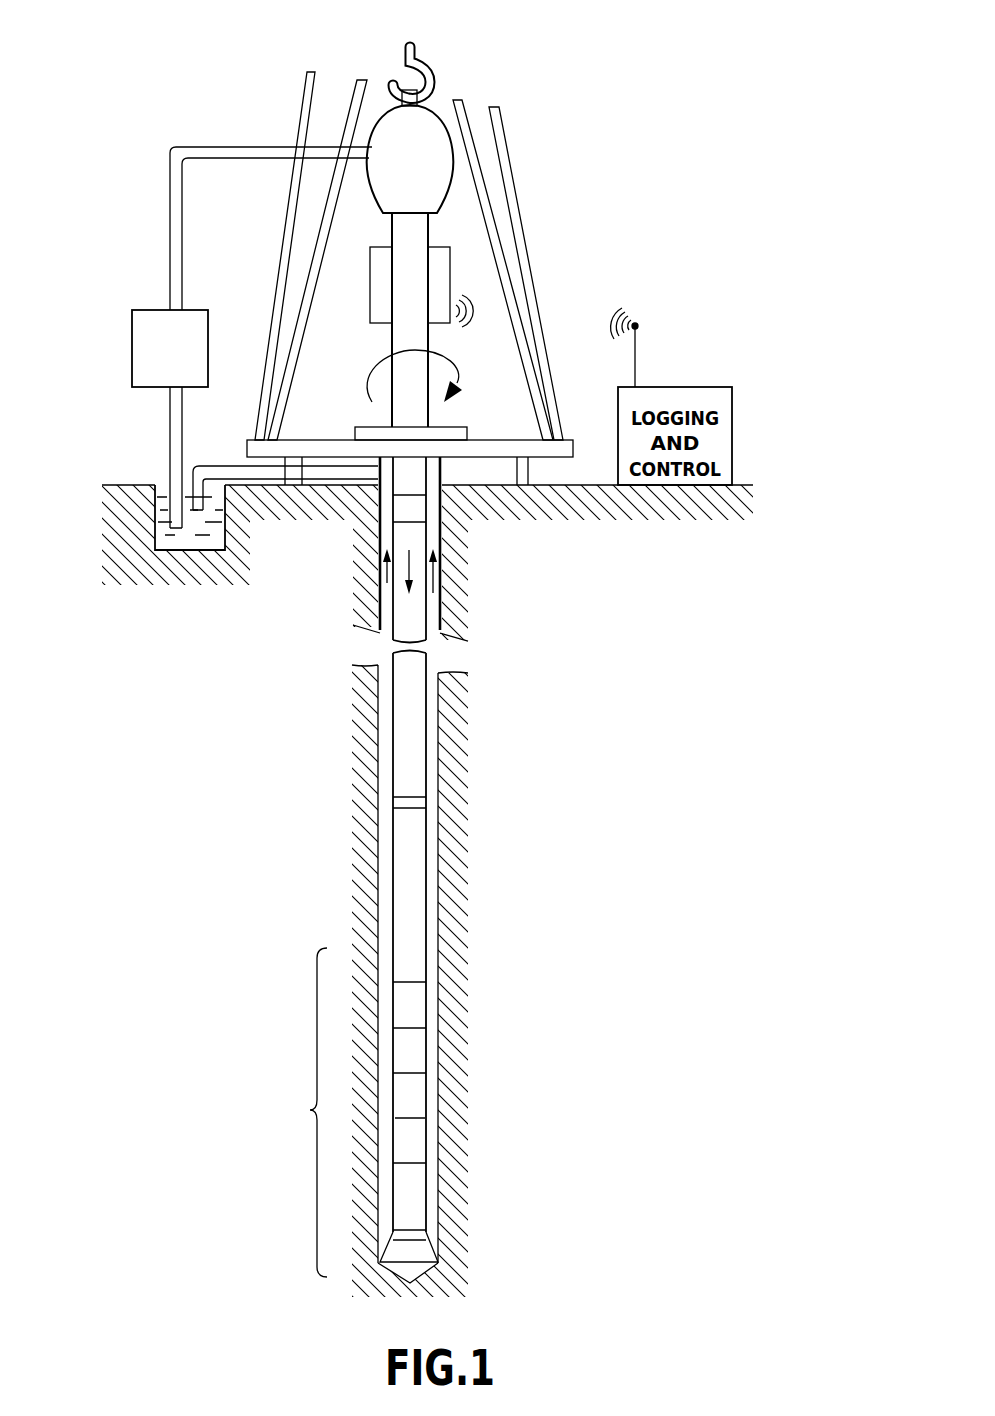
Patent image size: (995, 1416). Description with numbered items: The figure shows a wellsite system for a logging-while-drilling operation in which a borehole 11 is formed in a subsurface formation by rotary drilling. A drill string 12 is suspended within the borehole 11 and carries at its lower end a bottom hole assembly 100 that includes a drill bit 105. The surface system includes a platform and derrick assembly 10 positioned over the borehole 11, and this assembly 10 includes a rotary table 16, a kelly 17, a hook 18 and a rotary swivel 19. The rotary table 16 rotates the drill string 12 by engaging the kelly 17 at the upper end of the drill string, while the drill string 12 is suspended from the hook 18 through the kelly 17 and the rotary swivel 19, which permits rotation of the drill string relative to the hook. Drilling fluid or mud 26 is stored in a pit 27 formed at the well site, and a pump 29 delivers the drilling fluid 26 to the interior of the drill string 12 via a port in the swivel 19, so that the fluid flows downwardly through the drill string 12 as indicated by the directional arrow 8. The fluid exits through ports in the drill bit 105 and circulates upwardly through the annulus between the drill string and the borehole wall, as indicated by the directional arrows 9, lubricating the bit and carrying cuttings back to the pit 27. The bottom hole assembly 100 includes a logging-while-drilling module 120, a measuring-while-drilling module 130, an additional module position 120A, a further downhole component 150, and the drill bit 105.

The platform and derrick assembly 10 is at (547, 142).
The hook 18 is at (403, 53).
The rotary swivel 19 is at (378, 188).
The kelly 17 is at (408, 337).
The rotary table 16 is at (460, 428).
The borehole 11 is at (446, 481).
The drill string 12 is at (398, 478).
The directional arrows 9 is at (381, 558).
The directional arrow 8 is at (405, 597).
The pump 29 is at (210, 352).
The pit 27 is at (156, 478).
The drilling fluid 26 is at (196, 541).
The bottom hole assembly 100 is at (289, 1112).
The logging-while-drilling module 120 is at (410, 1058).
The measuring-while-drilling module 130 is at (410, 1108).
The additional LWD and/or MWD module 120A is at (412, 1145).
The downhole tool 150 is at (410, 1192).
The drill bit 105 is at (413, 1256).